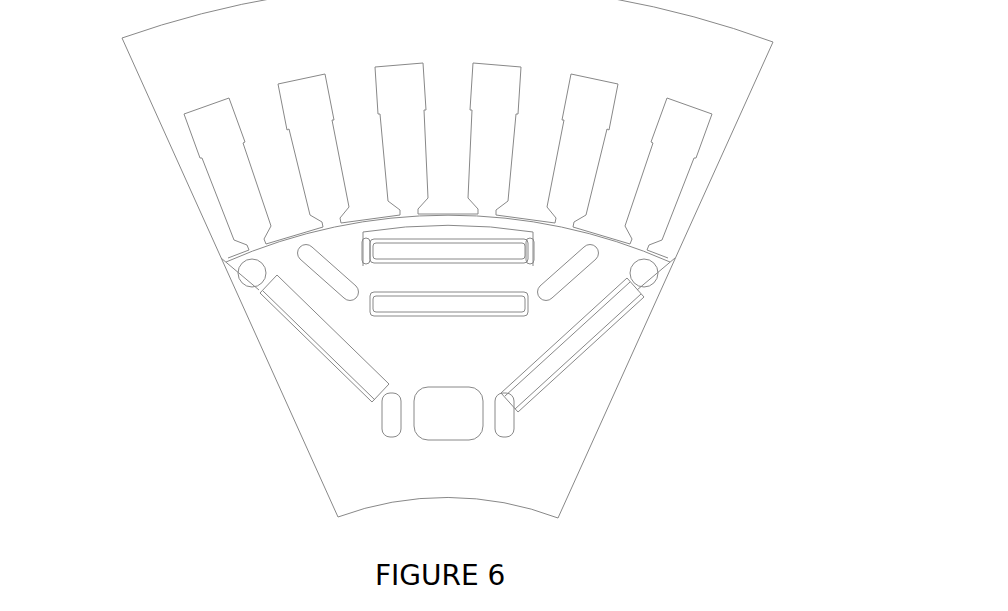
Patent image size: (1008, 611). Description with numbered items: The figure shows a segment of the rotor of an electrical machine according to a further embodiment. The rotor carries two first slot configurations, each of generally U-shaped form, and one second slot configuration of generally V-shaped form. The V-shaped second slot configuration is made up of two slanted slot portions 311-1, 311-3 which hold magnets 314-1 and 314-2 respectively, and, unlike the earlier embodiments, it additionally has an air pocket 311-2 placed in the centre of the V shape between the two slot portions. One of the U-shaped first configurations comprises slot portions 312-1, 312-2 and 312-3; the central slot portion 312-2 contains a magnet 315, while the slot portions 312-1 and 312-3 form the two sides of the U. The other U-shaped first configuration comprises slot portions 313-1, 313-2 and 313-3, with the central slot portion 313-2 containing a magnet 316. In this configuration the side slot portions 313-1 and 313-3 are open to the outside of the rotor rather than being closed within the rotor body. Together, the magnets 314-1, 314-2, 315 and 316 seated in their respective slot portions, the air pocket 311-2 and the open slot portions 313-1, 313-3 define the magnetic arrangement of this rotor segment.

The slot portion 311-1 is at (266, 311).
The air pocket 311-2 is at (428, 413).
The slot portion 311-3 is at (622, 321).
The slot portion 312-1 is at (333, 275).
The slot portion 312-2 is at (440, 323).
The slot portion 312-3 is at (560, 281).
The slot portion 313-1 is at (355, 241).
The slot portion 313-2 is at (525, 273).
The slot portion 313-3 is at (543, 238).
The magnet 314-1 is at (310, 321).
The magnet 314-2 is at (560, 352).
The magnet 315 is at (407, 303).
The magnet 316 is at (458, 252).